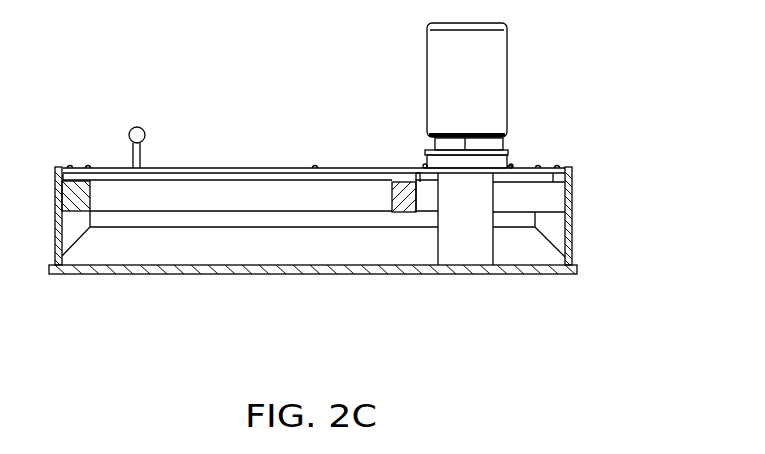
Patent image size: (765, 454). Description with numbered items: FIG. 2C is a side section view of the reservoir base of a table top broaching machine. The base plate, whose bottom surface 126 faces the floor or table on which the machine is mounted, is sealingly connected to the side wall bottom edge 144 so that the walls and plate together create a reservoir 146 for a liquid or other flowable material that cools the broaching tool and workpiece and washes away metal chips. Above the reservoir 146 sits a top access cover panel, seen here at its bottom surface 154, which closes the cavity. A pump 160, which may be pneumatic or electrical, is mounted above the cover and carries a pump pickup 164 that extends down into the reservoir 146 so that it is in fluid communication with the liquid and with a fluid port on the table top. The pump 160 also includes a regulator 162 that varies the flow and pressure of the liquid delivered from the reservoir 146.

The bottom surface 126 is at (369, 183).
The bottom edge 144 is at (572, 229).
The reservoir 146 is at (168, 247).
The bottom surface 154 is at (427, 183).
The pump 160 is at (561, 94).
The regulator 162 is at (468, 94).
The pump pickup 164 is at (465, 223).